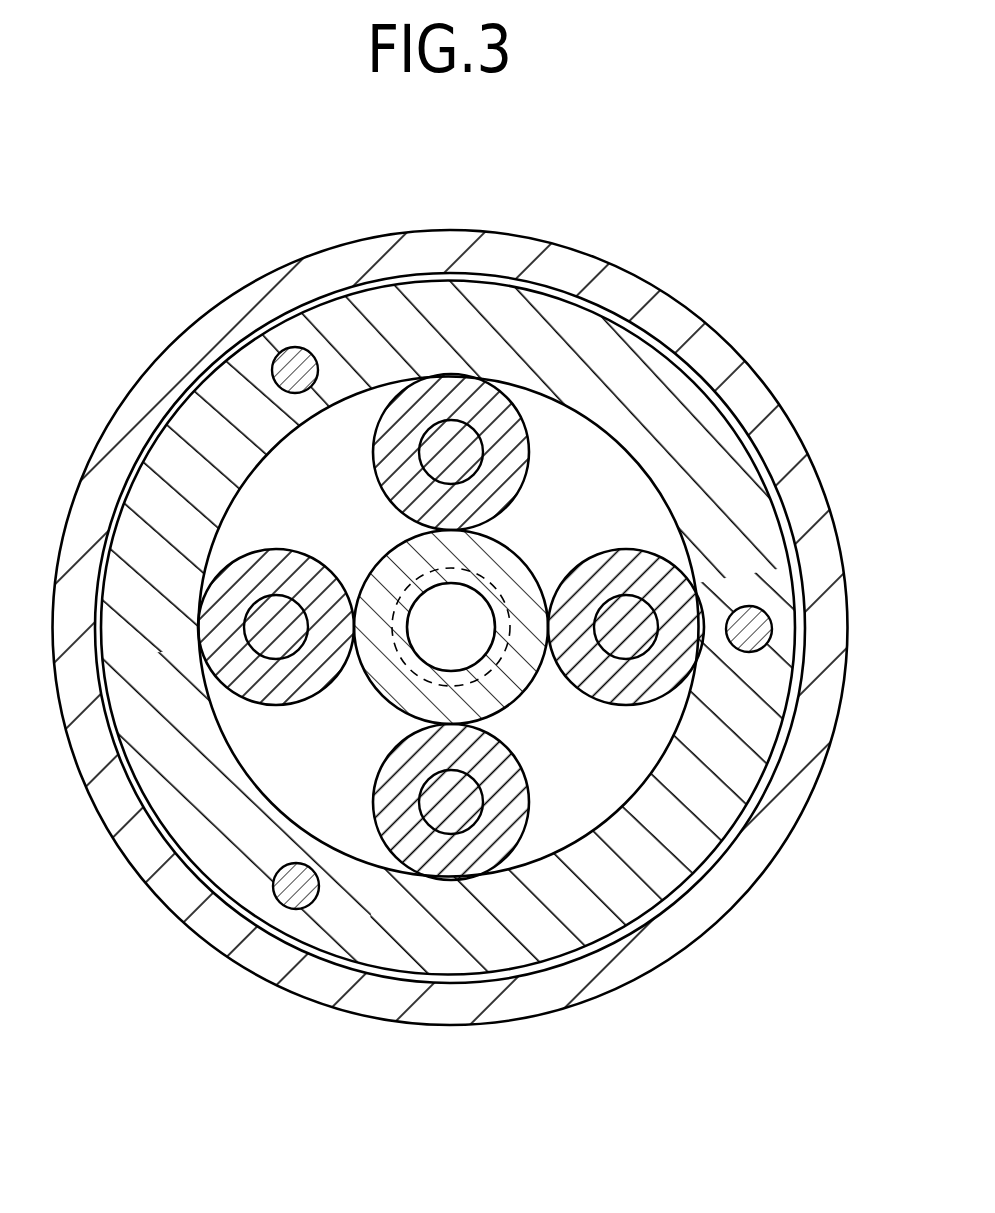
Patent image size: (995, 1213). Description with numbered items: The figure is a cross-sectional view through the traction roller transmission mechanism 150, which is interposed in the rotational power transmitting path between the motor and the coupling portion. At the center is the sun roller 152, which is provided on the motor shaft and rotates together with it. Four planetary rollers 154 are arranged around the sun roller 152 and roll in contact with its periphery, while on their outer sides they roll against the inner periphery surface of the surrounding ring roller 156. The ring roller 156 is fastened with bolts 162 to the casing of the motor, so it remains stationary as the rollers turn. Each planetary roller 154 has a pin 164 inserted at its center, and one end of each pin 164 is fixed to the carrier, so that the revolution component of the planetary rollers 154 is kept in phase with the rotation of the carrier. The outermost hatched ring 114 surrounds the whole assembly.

The outer housing ring 114 is at (410, 253).
The traction roller transmission mechanism 150 is at (457, 623).
The sun roller 152 is at (522, 695).
The planetary rollers 154 is at (280, 577).
The ring roller 156 is at (690, 442).
The bolts 162 is at (295, 357).
The pin 164 is at (452, 805).